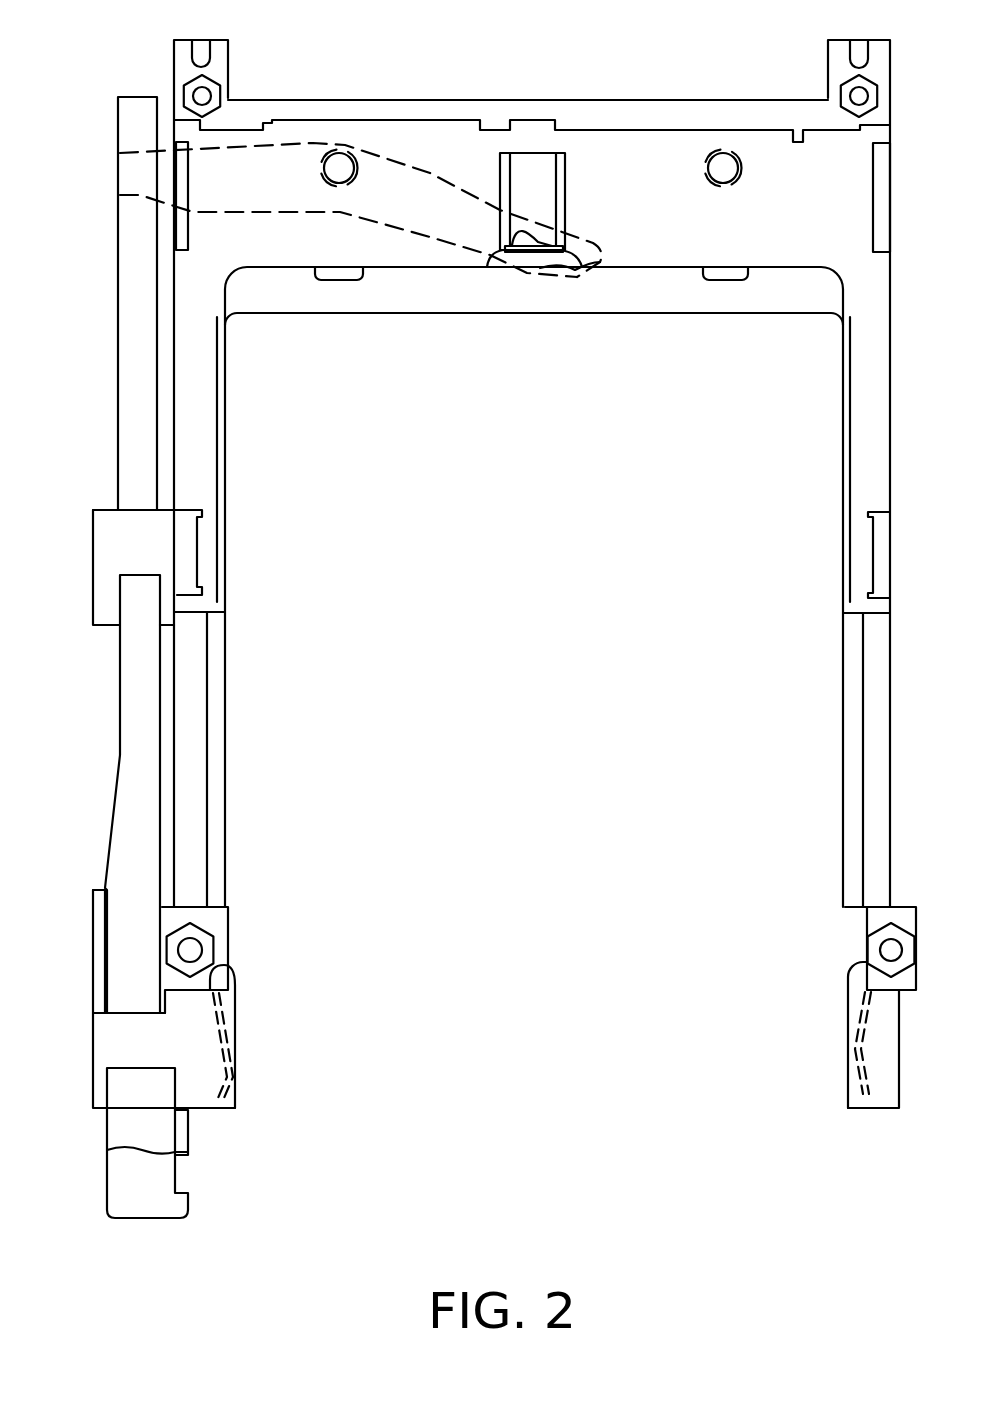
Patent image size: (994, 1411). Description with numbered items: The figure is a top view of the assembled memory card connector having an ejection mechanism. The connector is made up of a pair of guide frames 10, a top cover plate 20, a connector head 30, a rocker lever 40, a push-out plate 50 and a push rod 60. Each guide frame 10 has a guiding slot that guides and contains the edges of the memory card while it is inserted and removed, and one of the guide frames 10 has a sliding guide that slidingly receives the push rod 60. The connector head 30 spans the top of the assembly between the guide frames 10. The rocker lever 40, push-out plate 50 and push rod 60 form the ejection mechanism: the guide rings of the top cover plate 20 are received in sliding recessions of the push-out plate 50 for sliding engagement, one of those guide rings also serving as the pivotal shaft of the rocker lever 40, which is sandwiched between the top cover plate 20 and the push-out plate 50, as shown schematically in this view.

The guide frame 10 is at (202, 742).
The top cover plate 20 is at (780, 253).
The connector head 30 is at (450, 106).
The rocker lever 40 is at (420, 225).
The push-out plate 50 is at (532, 295).
The push rod 60 is at (128, 835).